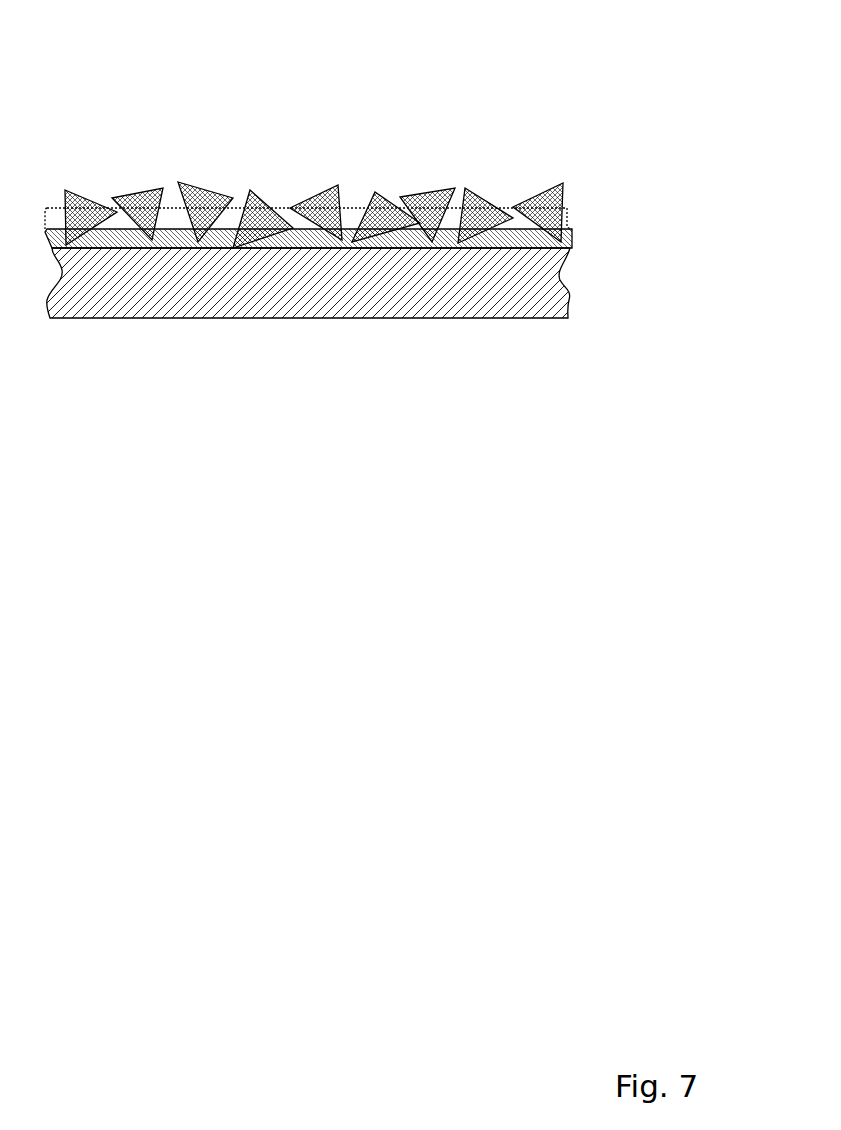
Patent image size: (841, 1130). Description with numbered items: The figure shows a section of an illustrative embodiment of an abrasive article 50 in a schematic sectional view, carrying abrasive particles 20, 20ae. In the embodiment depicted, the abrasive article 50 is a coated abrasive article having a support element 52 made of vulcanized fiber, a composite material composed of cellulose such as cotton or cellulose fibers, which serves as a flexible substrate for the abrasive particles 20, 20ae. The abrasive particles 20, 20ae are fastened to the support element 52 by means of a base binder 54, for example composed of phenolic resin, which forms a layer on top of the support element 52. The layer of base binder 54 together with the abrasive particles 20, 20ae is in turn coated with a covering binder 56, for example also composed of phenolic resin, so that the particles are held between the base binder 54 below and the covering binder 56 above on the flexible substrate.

The abrasive article 50 is at (482, 88).
The support element 52 is at (410, 295).
The base binder 54 is at (512, 233).
The covering binder 56 is at (453, 223).
The abrasive particles 20 is at (373, 191).
The abrasive particles 20ae is at (314, 215).